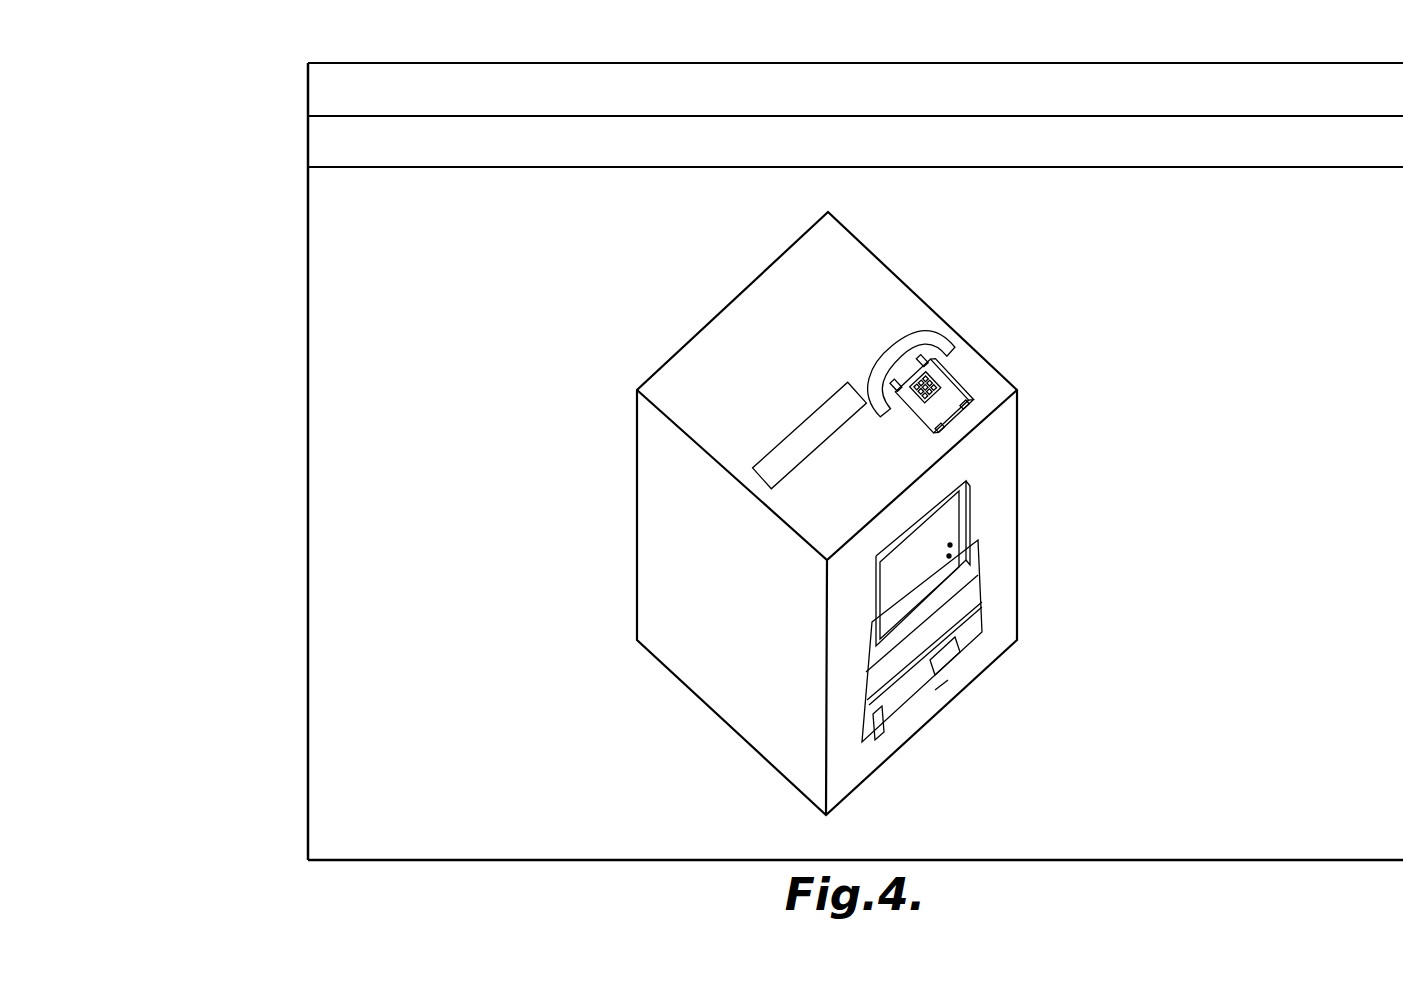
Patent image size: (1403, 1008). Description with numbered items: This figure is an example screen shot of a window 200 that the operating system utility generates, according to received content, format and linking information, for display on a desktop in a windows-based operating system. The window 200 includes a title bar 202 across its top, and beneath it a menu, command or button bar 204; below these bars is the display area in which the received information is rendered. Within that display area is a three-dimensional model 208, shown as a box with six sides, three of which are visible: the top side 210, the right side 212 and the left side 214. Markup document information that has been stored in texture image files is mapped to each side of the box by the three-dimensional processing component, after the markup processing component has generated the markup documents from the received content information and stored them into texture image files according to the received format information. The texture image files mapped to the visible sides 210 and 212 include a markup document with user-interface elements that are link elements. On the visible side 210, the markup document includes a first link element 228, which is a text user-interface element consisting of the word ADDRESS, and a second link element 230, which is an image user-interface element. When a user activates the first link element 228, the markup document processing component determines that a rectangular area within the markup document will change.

The window 200 is at (308, 456).
The title bar 202 is at (316, 85).
The menu, command or button bar 204 is at (316, 137).
The three-dimensional model 208 is at (687, 324).
The visible side 210 is at (895, 282).
The visible side 212 is at (997, 545).
The visible side 214 is at (654, 596).
The first link element 228 is at (834, 436).
The second link element 230 is at (945, 343).